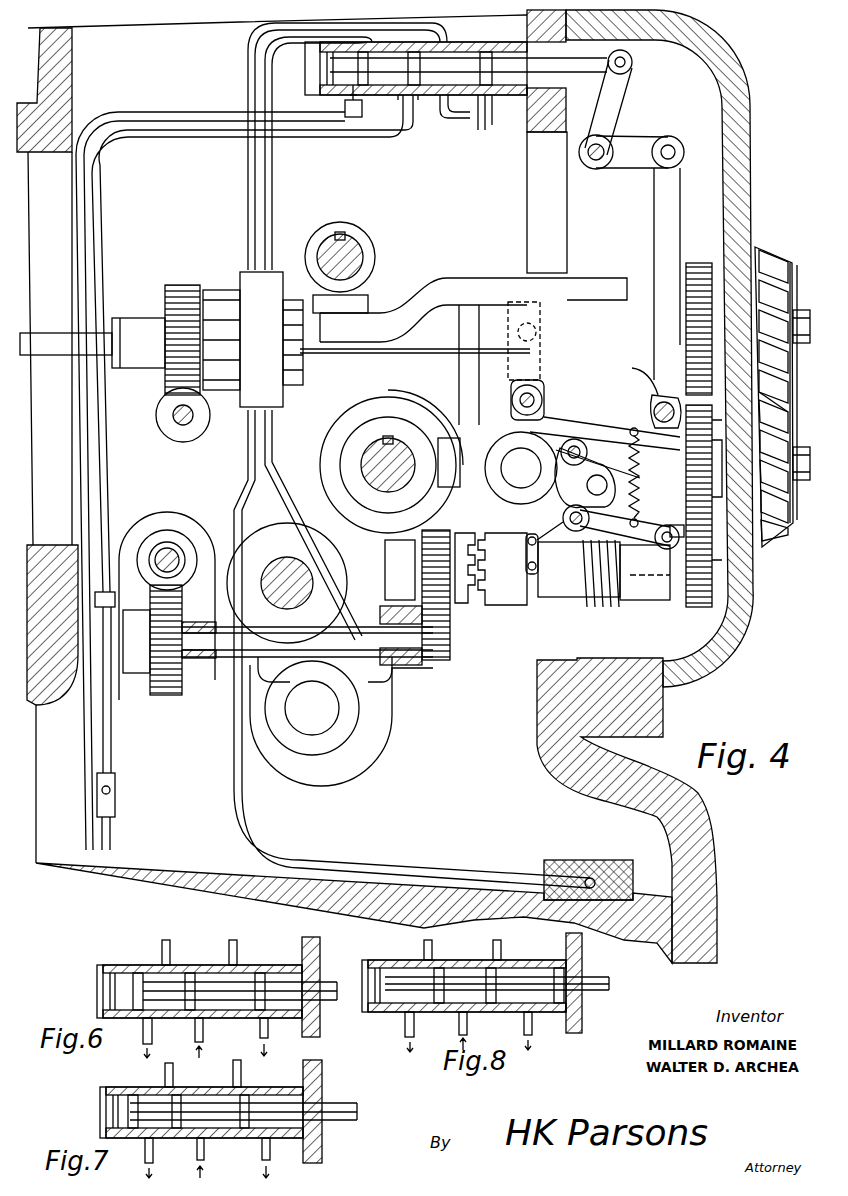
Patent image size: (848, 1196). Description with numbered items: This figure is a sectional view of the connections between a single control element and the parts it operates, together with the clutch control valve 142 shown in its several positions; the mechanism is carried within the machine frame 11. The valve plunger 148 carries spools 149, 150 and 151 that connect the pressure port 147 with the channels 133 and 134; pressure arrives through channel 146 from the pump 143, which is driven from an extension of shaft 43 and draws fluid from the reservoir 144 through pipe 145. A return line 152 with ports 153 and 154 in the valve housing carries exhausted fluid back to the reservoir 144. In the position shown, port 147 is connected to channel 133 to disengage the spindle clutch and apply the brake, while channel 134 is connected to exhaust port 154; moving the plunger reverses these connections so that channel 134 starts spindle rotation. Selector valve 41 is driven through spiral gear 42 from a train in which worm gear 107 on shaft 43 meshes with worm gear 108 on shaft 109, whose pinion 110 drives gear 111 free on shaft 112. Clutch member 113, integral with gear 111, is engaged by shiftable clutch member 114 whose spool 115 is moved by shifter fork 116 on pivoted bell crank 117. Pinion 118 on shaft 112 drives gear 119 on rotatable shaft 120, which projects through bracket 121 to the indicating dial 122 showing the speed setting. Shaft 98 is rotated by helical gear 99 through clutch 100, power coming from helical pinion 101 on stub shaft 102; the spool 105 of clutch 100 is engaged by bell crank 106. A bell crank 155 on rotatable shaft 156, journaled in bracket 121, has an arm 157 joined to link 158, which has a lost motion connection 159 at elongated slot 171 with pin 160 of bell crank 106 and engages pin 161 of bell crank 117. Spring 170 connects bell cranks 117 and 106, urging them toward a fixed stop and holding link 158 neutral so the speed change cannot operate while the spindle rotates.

In FIG. 4, the housing 11 is at (705, 810).
In FIG. 4, the selector valve 41 is at (600, 425).
In FIG. 4, the spiral gear 42 is at (598, 607).
In FIG. 4, the shaft 43 is at (158, 550).
In FIG. 4, the shaft 98 is at (58, 358).
In FIG. 4, the helical gear 99 is at (165, 290).
In FIG. 4, the clutch 100 is at (212, 290).
In FIG. 4, the helical pinion 101 is at (160, 400).
In FIG. 4, the stub shaft 102 is at (195, 420).
In FIG. 4, the spool 105 is at (500, 290).
In FIG. 4, the bell crank 106 is at (553, 400).
In FIG. 4, the worm gear 107 is at (162, 545).
In FIG. 4, the worm gear 108 is at (158, 697).
In FIG. 4, the shaft 109 is at (220, 660).
In FIG. 4, the pinion 110 is at (435, 662).
In FIG. 4, the gear 111 is at (440, 600).
In FIG. 4, the shaft 112 is at (640, 570).
In FIG. 4, the clutch member 113 is at (478, 603).
In FIG. 4, the shiftable clutch member 114 is at (505, 605).
In FIG. 4, the spool 115 is at (535, 600).
In FIG. 4, the shifter fork 116 is at (526, 540).
In FIG. 4, the bell crank 117 is at (558, 535).
In FIG. 4, the pinion 118 is at (700, 612).
In FIG. 4, the gear 119 is at (690, 492).
In FIG. 4, the rotatable shaft 120 is at (718, 435).
In FIG. 4, the bracket 121 is at (745, 188).
In FIG. 4, the indicating dial 122 is at (772, 546).
In FIG. 4, the channel 133 is at (276, 81).
In FIG. 6, the channel 133 is at (170, 952).
In FIG. 7, the channel 133 is at (173, 1078).
In FIG. 8, the channel 133 is at (432, 952).
In FIG. 4, the channel 134 is at (440, 27).
In FIG. 6, the channel 134 is at (237, 952).
In FIG. 7, the channel 134 is at (241, 1078).
In FIG. 8, the channel 134 is at (501, 952).
In FIG. 4, the control valve 142 is at (478, 36).
In FIG. 6, the control valve 142 is at (110, 965).
In FIG. 7, the control valve 142 is at (112, 1087).
In FIG. 8, the control valve 142 is at (388, 960).
In FIG. 4, the pump 143 is at (167, 520).
In FIG. 4, the reservoir 144 is at (652, 888).
In FIG. 4, the pipe 145 is at (368, 862).
In FIG. 4, the channel 146 is at (103, 445).
In FIG. 4, the pressure port 147 is at (418, 102).
In FIG. 6, the pressure port 147 is at (203, 1040).
In FIG. 7, the pressure port 147 is at (204, 1146).
In FIG. 8, the pressure port 147 is at (467, 1022).
In FIG. 4, the valve plunger 148 is at (573, 63).
In FIG. 6, the valve plunger 148 is at (325, 1000).
In FIG. 7, the valve plunger 148 is at (338, 1120).
In FIG. 8, the valve plunger 148 is at (600, 990).
In FIG. 4, the spool 149 is at (368, 110).
In FIG. 4, the spool 150 is at (452, 118).
In FIG. 4, the spool 151 is at (486, 118).
In FIG. 4, the return line 152 is at (165, 118).
In FIG. 4, the port 153 is at (345, 95).
In FIG. 4, the exhaust port 154 is at (492, 125).
In FIG. 4, the bell crank 155 is at (622, 93).
In FIG. 4, the rotatable shaft 156 is at (590, 165).
In FIG. 4, the arm 157 is at (628, 147).
In FIG. 4, the link 158 is at (672, 235).
In FIG. 4, the lost motion connection 159 is at (632, 368).
In FIG. 4, the pin 160 is at (668, 398).
In FIG. 4, the pin 161 is at (677, 560).
In FIG. 4, the spring 170 is at (640, 478).
In FIG. 4, the elongated slot 171 is at (650, 415).